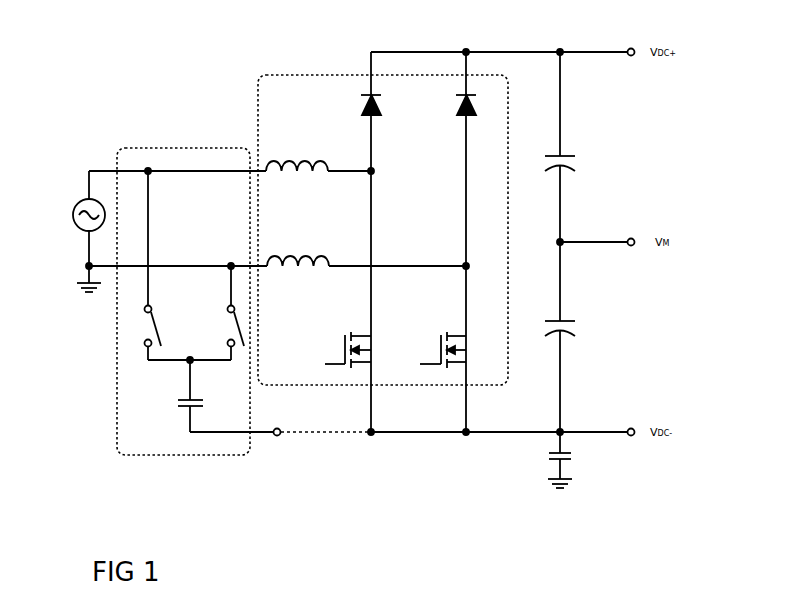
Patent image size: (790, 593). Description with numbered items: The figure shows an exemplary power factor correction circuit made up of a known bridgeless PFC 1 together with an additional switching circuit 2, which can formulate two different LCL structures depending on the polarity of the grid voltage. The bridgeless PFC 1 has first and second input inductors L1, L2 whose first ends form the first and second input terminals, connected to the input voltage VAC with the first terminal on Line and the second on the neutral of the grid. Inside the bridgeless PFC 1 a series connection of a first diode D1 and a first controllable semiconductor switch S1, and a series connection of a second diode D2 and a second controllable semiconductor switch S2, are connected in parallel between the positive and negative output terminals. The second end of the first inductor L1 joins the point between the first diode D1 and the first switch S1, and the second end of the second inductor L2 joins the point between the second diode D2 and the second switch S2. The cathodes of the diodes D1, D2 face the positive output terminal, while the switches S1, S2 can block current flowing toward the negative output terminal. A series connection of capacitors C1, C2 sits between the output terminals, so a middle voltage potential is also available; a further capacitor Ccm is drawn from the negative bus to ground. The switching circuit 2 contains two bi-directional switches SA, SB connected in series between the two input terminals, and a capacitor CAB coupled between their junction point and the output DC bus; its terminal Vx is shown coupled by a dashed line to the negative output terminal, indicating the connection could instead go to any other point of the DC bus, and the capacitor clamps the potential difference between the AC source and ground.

The bridgeless PFC 1 is at (266, 73).
The switching circuit 2 is at (130, 148).
The input voltage VAC is at (71, 231).
The first bi-directional switch SA is at (141, 265).
The second bi-directional switch SB is at (224, 313).
The capacitor CAB is at (173, 396).
The first input inductor L1 is at (297, 155).
The second input inductor L2 is at (298, 251).
The first diode D1 is at (384, 105).
The second diode D2 is at (479, 105).
The first controllable semiconductor switch S1 is at (344, 350).
The second controllable semiconductor switch S2 is at (439, 350).
The first output capacitor C1 is at (545, 164).
The second output capacitor C2 is at (545, 330).
The common-mode capacitor Ccm is at (575, 460).
The capacitor terminal Vx is at (278, 442).